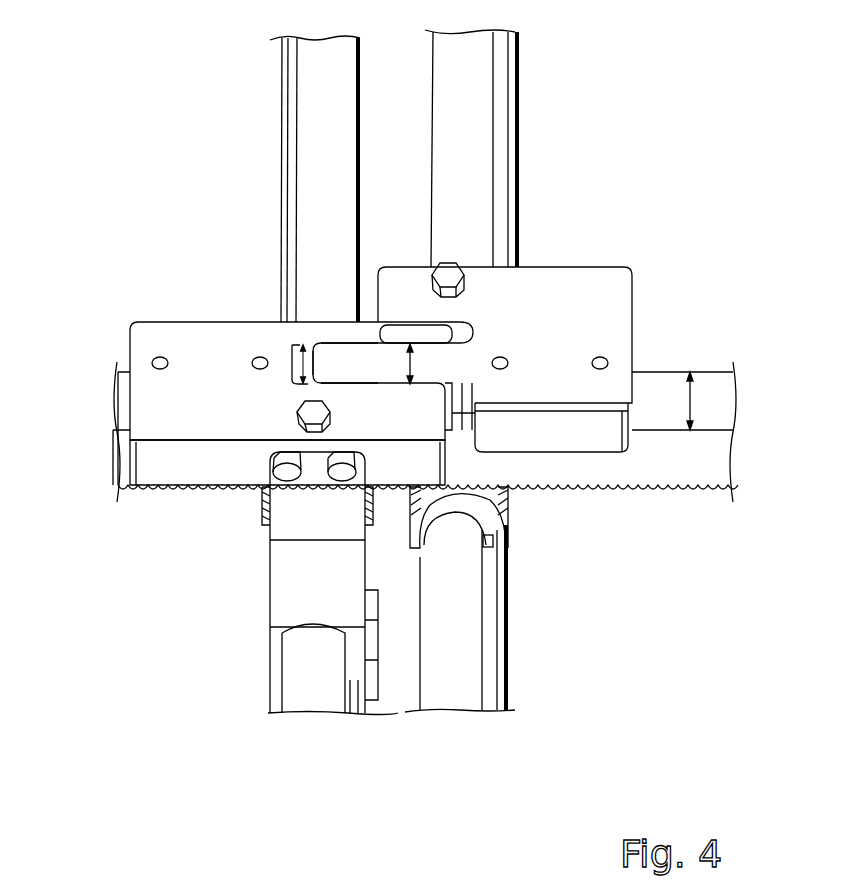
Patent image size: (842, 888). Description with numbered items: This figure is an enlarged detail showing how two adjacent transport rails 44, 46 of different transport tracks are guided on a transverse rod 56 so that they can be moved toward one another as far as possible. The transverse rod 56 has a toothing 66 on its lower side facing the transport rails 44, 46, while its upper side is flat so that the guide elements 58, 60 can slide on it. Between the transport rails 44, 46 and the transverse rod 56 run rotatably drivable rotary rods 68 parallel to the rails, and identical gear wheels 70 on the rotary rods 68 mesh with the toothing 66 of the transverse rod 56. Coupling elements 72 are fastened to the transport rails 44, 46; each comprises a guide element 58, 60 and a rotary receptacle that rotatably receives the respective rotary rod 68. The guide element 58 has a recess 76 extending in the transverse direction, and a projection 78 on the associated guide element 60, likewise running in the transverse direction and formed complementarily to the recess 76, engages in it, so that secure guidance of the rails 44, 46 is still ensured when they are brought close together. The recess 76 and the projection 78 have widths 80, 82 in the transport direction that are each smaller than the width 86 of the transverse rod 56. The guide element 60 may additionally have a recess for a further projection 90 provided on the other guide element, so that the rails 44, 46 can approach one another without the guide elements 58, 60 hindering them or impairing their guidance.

The transport rail 44 is at (280, 168).
The transport rail 46 is at (522, 162).
The transverse rod 56 is at (126, 460).
The guide element 58 is at (147, 333).
The guide element 60 is at (599, 290).
The toothing 66 is at (626, 487).
The rotary rod 68 is at (318, 102).
The gear wheel 70 is at (260, 505).
The coupling element 72 is at (300, 591).
The recess 76 is at (293, 352).
The projection 78 is at (340, 355).
The width 80 is at (298, 370).
The width 82 is at (415, 365).
The width 86 is at (694, 401).
The projection 90 is at (432, 330).